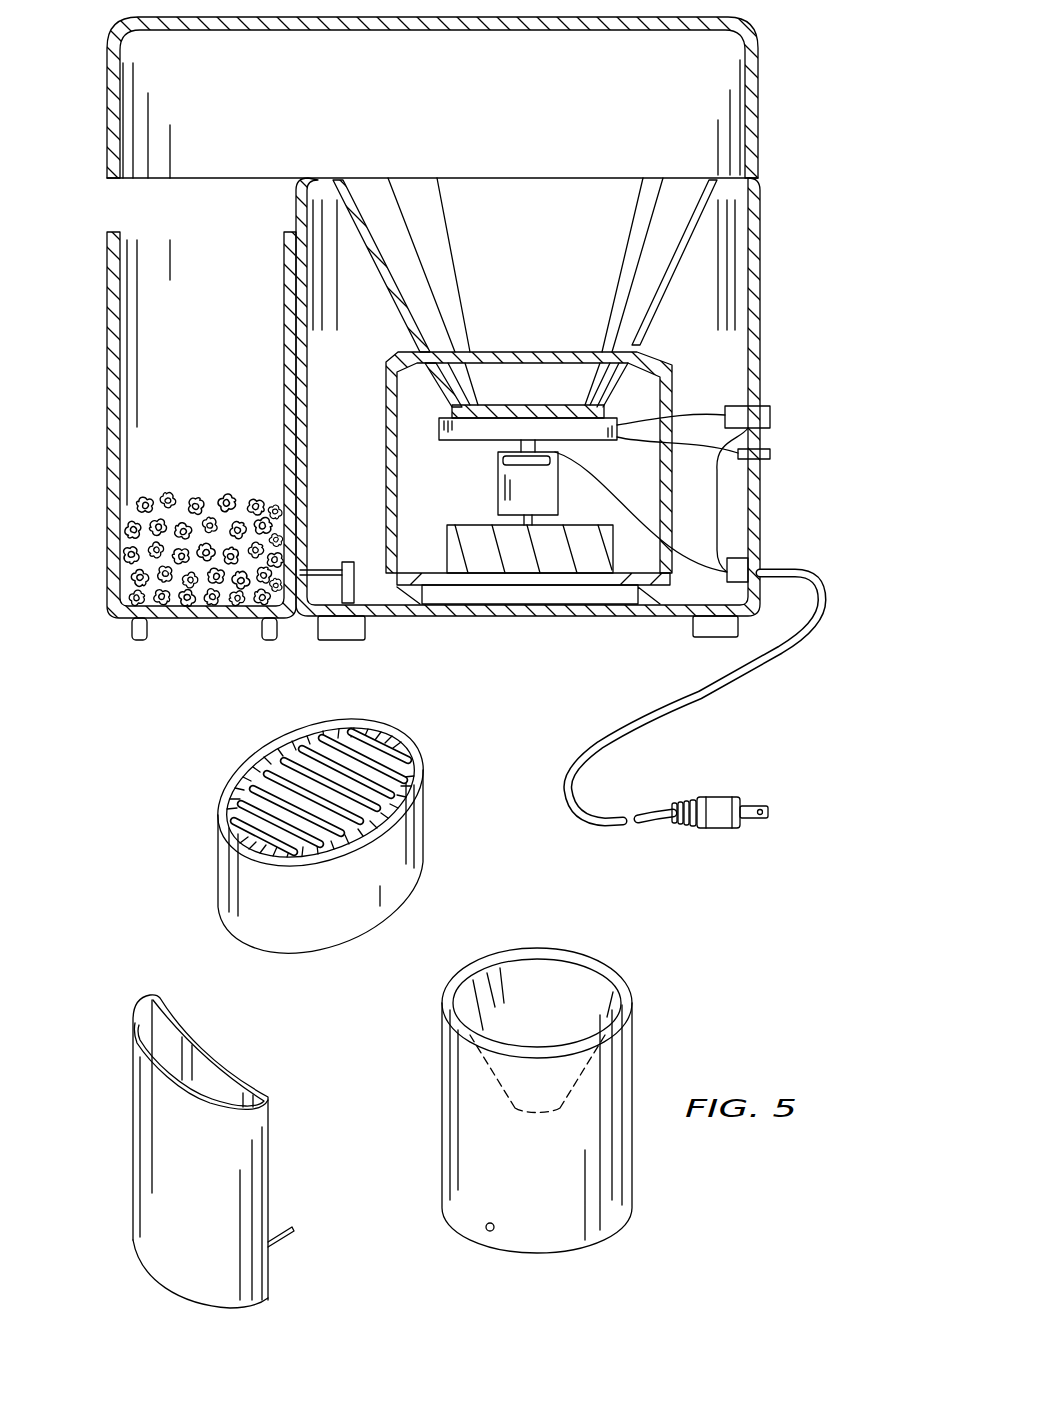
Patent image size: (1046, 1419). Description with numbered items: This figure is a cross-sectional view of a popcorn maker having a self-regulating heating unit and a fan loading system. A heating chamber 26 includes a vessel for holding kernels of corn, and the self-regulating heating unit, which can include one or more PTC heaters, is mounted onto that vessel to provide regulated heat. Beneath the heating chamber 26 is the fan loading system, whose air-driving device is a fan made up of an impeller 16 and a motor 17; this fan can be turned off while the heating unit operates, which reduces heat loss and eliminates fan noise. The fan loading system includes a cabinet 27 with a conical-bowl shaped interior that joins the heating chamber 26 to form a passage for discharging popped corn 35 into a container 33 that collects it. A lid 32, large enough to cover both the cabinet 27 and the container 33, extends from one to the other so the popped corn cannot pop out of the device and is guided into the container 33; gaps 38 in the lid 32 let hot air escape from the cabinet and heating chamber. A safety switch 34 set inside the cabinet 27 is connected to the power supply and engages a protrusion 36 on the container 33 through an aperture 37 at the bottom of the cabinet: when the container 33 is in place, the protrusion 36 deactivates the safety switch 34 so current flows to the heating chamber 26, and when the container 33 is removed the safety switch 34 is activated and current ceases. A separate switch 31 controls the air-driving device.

The impeller 16 is at (470, 527).
The motor 17 is at (560, 485).
The heating chamber 26 is at (437, 427).
The cabinet 27 is at (554, 726).
The switch 31 is at (770, 455).
The lid 32 is at (460, 485).
The container 33 is at (175, 770).
The safety switch 34 is at (355, 585).
The popped corn 35 is at (198, 497).
The protrusion 36 is at (325, 572).
The aperture 37 is at (485, 1230).
The gaps 38 is at (306, 752).